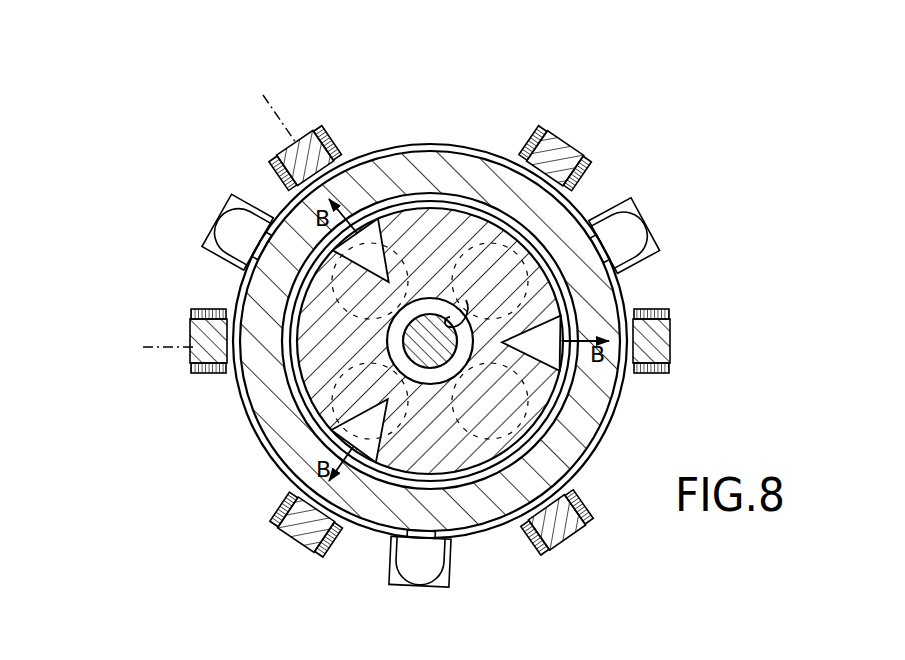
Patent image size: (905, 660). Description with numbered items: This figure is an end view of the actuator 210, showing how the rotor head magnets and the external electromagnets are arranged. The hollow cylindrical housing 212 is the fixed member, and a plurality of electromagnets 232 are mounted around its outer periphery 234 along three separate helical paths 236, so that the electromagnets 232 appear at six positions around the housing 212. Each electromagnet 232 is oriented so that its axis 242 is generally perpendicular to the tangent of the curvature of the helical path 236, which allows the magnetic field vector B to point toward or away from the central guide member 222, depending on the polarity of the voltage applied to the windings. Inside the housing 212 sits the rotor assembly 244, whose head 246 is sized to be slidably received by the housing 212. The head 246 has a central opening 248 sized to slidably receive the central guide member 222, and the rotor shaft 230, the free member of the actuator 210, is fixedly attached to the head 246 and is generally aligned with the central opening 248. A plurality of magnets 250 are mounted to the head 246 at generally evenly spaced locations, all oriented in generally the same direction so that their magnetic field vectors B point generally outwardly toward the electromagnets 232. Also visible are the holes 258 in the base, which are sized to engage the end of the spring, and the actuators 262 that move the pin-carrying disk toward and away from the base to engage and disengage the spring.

The actuator 210 is at (187, 156).
The cylindrical housing 212 is at (249, 423).
The central guide member 222 is at (395, 361).
The rotor shaft 230 is at (371, 345).
The electromagnets 232 is at (565, 138).
The outer periphery 234 is at (620, 404).
The helical path 236 is at (449, 144).
The axis 242 is at (283, 104).
The rotor assembly 244 is at (545, 248).
The head 246 is at (333, 404).
The central opening 248 is at (466, 300).
The magnets 250 is at (394, 249).
The holes 258 is at (332, 321).
The actuators 262 is at (216, 224).